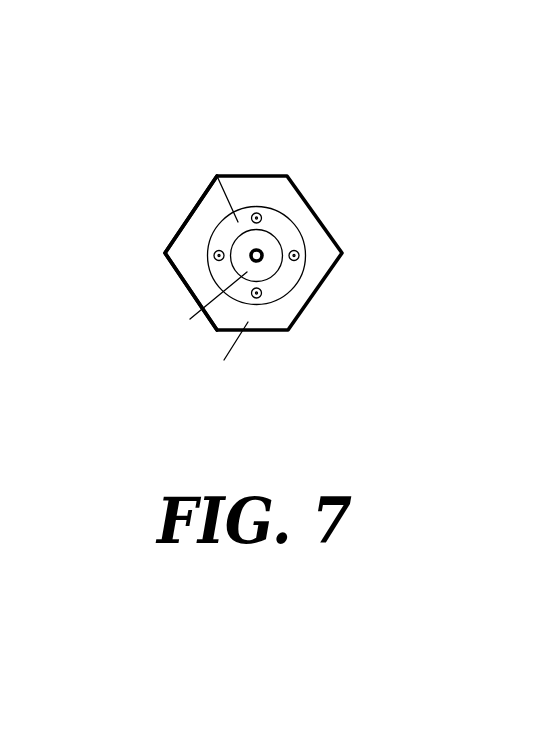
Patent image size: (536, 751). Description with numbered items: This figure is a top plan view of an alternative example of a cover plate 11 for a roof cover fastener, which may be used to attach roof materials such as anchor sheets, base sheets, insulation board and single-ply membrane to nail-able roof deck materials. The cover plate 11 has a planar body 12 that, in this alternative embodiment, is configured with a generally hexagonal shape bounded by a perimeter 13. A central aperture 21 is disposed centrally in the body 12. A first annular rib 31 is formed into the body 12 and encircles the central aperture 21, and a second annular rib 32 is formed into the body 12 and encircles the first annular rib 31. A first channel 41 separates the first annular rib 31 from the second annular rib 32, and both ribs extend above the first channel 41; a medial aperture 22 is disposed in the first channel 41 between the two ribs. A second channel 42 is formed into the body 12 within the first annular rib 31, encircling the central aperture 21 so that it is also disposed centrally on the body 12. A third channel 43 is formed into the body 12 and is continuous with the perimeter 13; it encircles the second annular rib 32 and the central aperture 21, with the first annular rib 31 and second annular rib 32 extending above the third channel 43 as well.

The cover plate 11 is at (85, 72).
The planar body 12 is at (313, 266).
The perimeter 13 is at (165, 253).
The central aperture 21 is at (252, 257).
The medial aperture 22 is at (266, 210).
The first annular rib 31 is at (267, 277).
The second annular rib 32 is at (292, 221).
The first channel 41 is at (241, 220).
The second channel 42 is at (250, 275).
The third channel 43 is at (252, 324).